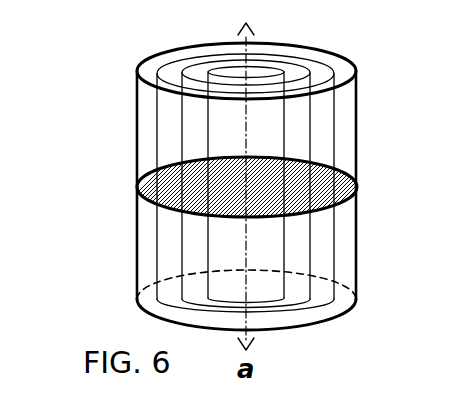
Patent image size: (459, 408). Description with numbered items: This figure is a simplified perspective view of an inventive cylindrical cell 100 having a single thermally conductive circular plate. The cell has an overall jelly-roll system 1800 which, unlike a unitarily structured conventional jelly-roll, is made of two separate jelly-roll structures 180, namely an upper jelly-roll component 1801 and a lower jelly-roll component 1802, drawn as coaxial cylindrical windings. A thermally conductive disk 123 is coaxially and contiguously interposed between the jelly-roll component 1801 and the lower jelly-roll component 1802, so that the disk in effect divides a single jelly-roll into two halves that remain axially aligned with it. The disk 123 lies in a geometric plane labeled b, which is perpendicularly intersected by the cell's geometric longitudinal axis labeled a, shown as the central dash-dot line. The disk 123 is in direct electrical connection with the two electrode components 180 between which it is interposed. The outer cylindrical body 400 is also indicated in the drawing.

The inventive cylindrical cell 100 is at (236, 217).
The jelly-roll structure 180 is at (249, 186).
The jelly-roll component 1801 is at (347, 122).
The lower jelly-roll component 1802 is at (295, 258).
The jelly-roll system 1800 is at (236, 173).
The thermally conductive disk 123 is at (226, 173).
The outer cylindrical body 400 is at (249, 186).